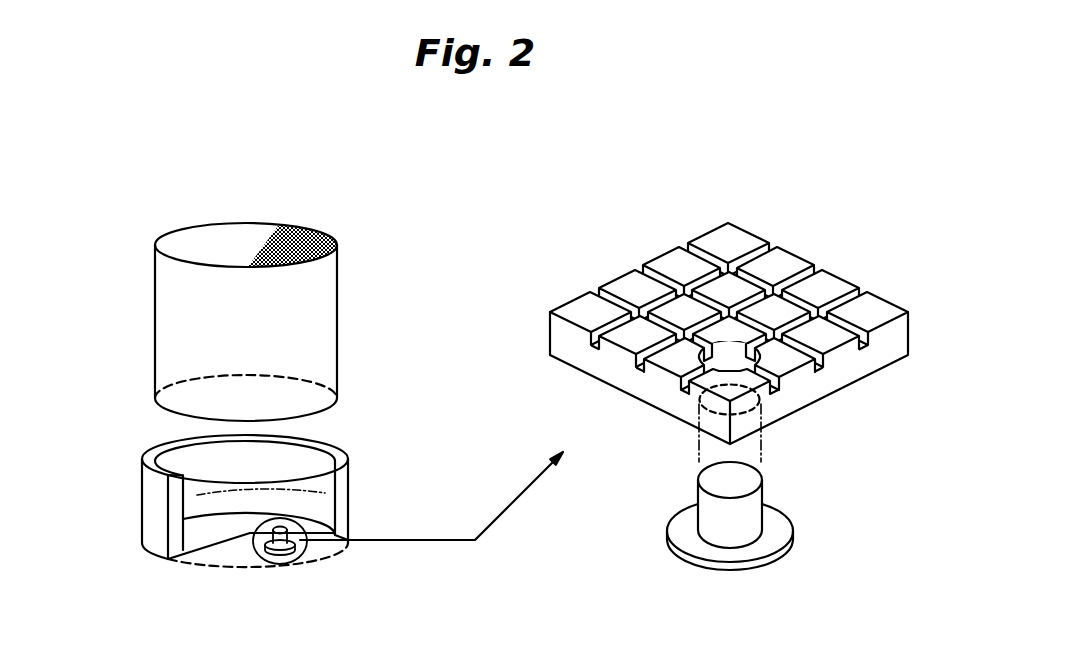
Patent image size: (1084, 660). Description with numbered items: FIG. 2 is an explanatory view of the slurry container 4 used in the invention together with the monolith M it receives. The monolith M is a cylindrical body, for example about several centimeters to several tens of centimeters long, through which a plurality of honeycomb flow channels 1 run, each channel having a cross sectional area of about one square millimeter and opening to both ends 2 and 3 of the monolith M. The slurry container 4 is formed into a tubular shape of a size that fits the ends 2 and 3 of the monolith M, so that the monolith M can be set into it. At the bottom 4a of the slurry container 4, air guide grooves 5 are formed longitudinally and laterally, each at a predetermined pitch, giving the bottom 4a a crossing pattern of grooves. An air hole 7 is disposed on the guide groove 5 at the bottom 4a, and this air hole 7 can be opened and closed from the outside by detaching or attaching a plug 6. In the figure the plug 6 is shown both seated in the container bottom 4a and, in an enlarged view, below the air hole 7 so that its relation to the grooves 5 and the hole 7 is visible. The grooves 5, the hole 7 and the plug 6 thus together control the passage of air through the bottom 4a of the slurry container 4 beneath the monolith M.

The honeycomb flow channels 1 is at (287, 230).
The end of the monolith 2 is at (168, 412).
The end of the monolith 3 is at (207, 201).
The monolith M is at (315, 292).
The slurry container 4 is at (348, 492).
The bottom 4a is at (210, 530).
The air guide grooves 5 is at (729, 302).
The plug 6 is at (290, 553).
The air hole 7 is at (732, 357).